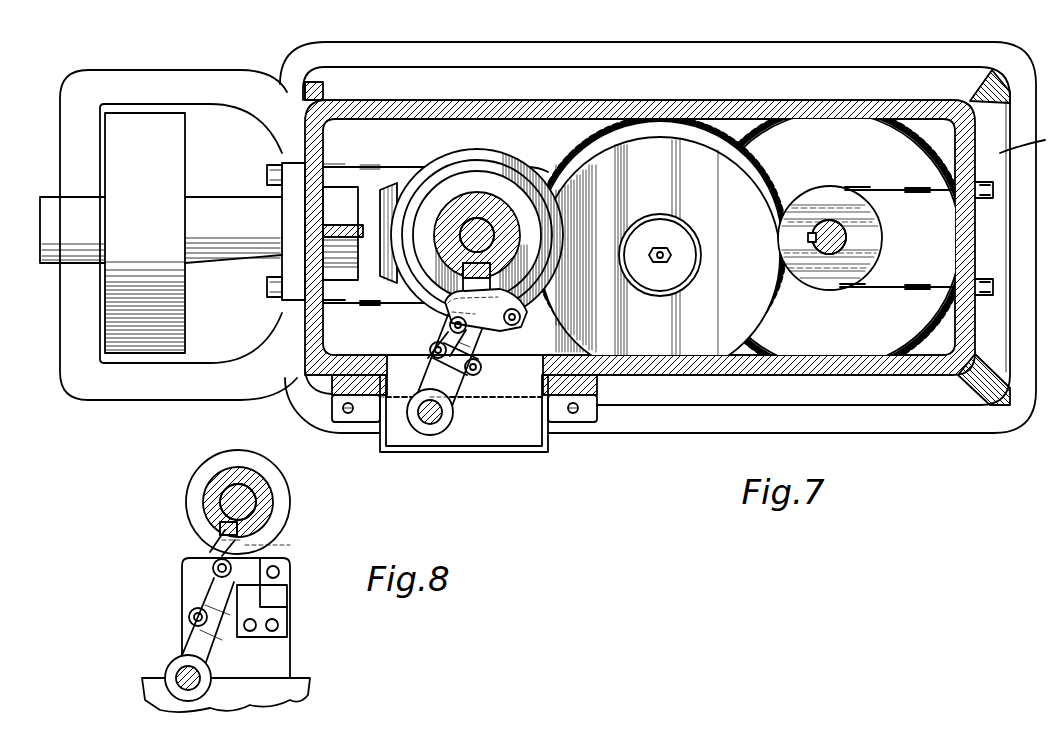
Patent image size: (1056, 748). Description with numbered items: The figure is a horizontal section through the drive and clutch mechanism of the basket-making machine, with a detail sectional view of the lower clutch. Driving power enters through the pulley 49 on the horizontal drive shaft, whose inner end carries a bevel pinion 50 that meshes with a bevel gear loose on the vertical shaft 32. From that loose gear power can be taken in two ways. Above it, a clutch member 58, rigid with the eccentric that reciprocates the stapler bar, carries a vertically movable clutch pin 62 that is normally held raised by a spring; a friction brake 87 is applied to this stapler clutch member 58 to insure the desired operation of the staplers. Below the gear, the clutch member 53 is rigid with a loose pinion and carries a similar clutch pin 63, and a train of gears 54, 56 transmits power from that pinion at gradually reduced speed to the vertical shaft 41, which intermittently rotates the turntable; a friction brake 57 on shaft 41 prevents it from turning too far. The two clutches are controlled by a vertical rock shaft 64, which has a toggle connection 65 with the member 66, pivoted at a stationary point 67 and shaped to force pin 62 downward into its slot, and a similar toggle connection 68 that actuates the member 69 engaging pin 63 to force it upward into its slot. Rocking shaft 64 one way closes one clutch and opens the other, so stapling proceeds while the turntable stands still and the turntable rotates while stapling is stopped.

In FIG. 7, the pulley 49 is at (145, 233).
In FIG. 7, the friction brake 87 is at (412, 165).
In FIG. 7, the vertical shaft 32 is at (471, 218).
In FIG. 8, the vertical shaft 32 is at (275, 503).
In FIG. 7, the clutch member 58 is at (507, 192).
In FIG. 7, the bevel pinion 50 is at (462, 276).
In FIG. 7, the clutch pin 62 is at (447, 275).
In FIG. 7, the gear 54 is at (660, 247).
In FIG. 7, the gear 56 is at (832, 240).
In FIG. 7, the vertical shaft 41 is at (840, 232).
In FIG. 7, the friction brake 57 is at (877, 288).
In FIG. 7, the vertical rock shaft 64 is at (433, 422).
In FIG. 8, the vertical rock shaft 64 is at (180, 675).
In FIG. 7, the toggle connection 65 is at (482, 372).
In FIG. 7, the member 66 is at (483, 326).
In FIG. 7, the stationary pivot point 67 is at (515, 319).
In FIG. 8, the clutch member 53 is at (200, 478).
In FIG. 8, the clutch pin 63 is at (220, 528).
In FIG. 8, the member 69 is at (277, 540).
In FIG. 8, the toggle connection 68 is at (195, 617).